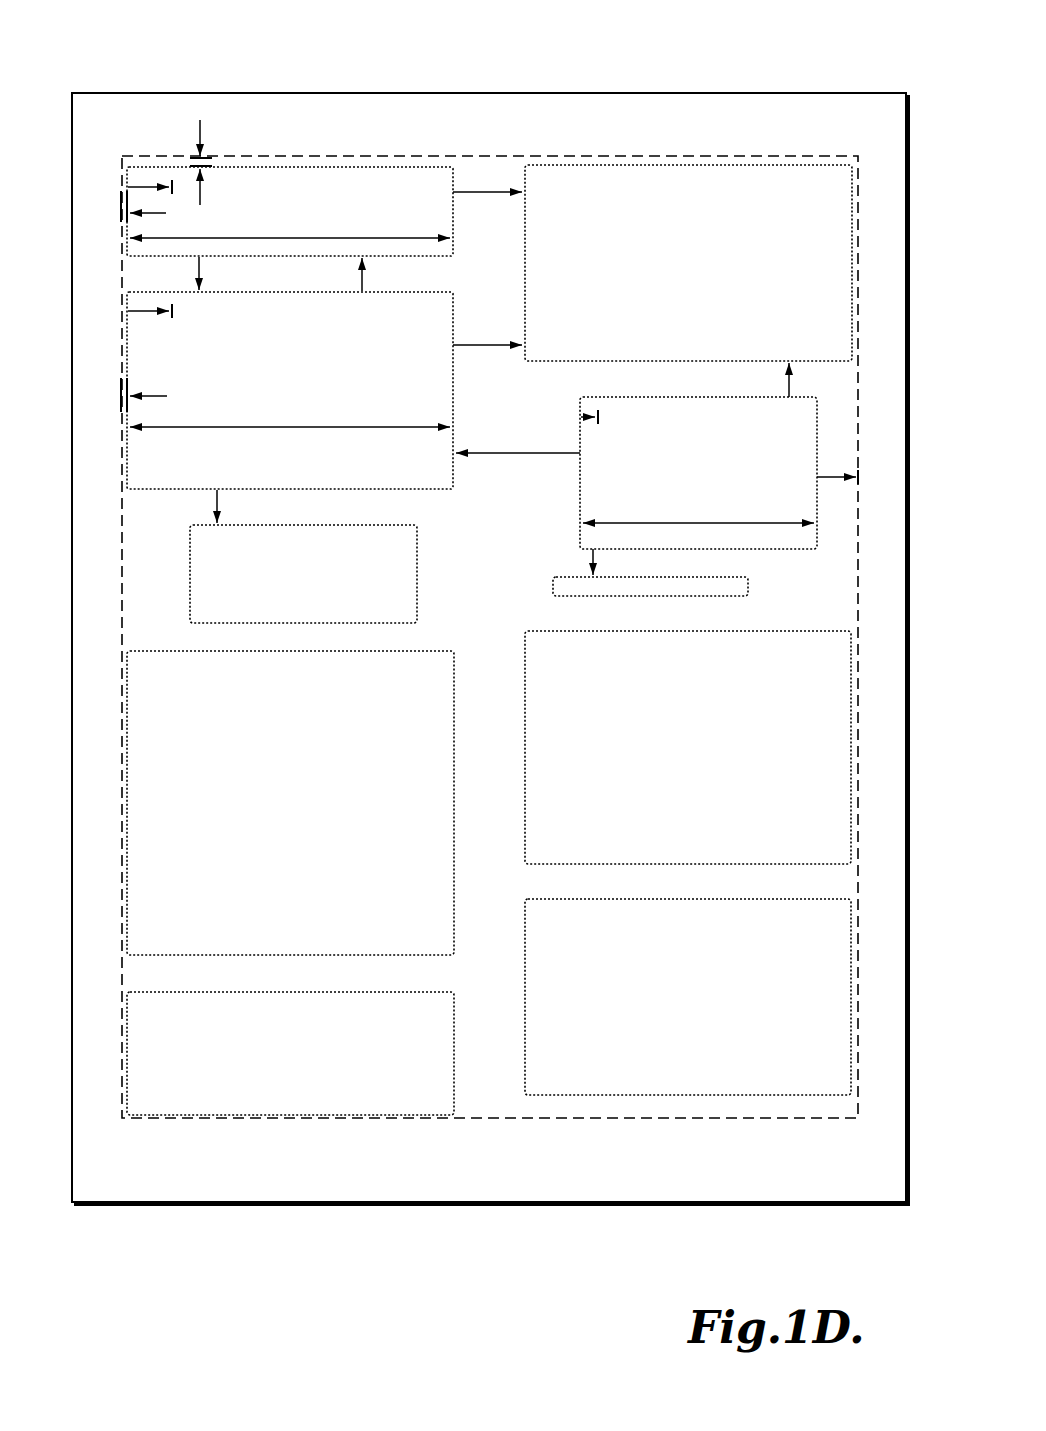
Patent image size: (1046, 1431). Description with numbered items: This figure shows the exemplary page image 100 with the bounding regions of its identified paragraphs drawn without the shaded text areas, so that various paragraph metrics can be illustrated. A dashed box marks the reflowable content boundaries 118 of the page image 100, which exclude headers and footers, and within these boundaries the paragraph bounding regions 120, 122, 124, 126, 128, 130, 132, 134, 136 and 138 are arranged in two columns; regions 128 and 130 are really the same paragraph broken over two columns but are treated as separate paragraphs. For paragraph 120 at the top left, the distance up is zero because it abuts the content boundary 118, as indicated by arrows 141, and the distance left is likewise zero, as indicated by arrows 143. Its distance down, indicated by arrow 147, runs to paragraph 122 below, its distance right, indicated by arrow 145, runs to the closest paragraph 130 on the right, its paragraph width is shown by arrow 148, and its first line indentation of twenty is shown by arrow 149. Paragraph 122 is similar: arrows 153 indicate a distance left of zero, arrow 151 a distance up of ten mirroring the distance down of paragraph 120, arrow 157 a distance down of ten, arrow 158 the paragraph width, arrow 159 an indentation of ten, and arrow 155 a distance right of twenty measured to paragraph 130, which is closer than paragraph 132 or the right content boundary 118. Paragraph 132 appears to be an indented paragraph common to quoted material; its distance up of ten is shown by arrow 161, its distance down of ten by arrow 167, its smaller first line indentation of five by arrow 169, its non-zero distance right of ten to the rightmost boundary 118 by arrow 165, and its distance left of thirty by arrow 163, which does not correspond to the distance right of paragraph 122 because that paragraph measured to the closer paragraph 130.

The page image 100 is at (615, 72).
The reflowable content boundaries 118 is at (325, 157).
The paragraph bounding region 120 is at (290, 211).
The paragraph bounding region 122 is at (290, 390).
The paragraph bounding region 124 is at (303, 574).
The paragraph bounding region 126 is at (290, 803).
The paragraph bounding region 128 is at (290, 1053).
The paragraph bounding region 130 is at (688, 263).
The paragraph bounding region 132 is at (698, 473).
The paragraph bounding region 134 is at (650, 587).
The paragraph bounding region 136 is at (688, 747).
The paragraph bounding region 138 is at (688, 997).
The distance up arrows 141 is at (216, 162).
The distance left arrows 143 is at (119, 214).
The distance right arrow 145 is at (487, 181).
The distance down arrow 147 is at (184, 273).
The paragraph width arrow 148 is at (290, 228).
The indentation arrow 149 is at (130, 187).
The distance up arrow 151 is at (384, 274).
The distance left arrows 153 is at (119, 397).
The distance right arrow 155 is at (487, 334).
The distance down arrow 157 is at (242, 506).
The paragraph width arrow 158 is at (472, 465).
The indentation arrow 159 is at (130, 311).
The distance up arrow 161 is at (814, 380).
The distance left arrow 163 is at (518, 441).
The distance right arrow 165 is at (838, 465).
The distance down arrow 167 is at (590, 556).
The indentation arrow 169 is at (580, 416).